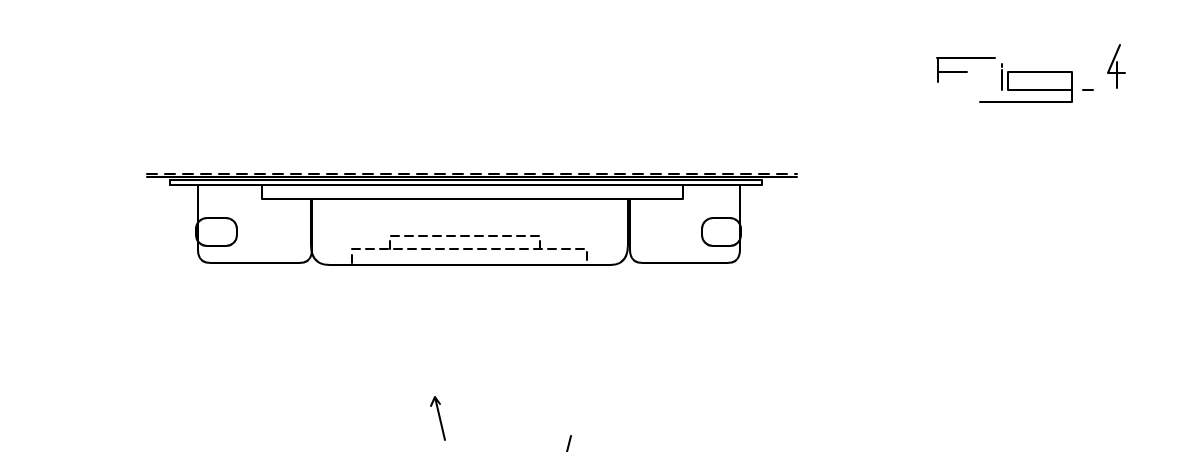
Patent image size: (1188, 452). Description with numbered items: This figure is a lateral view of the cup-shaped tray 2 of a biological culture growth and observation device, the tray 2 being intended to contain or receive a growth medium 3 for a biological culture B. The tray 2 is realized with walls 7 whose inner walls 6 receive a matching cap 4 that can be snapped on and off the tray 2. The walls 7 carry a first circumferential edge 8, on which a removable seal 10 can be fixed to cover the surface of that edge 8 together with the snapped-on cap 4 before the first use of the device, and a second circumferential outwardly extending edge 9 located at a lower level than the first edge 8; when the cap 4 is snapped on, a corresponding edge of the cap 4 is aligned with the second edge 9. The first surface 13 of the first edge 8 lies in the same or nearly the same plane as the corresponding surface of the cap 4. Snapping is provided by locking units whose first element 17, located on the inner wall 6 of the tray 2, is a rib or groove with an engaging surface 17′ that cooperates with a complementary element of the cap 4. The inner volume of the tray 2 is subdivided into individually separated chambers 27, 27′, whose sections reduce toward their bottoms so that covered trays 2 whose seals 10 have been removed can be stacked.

The cup-shaped tray 2 is at (441, 424).
The growth medium 3 is at (372, 270).
The cap 4 is at (571, 421).
The inner walls 6 is at (207, 223).
The walls 7 is at (277, 241).
The first circumferential edge 8 is at (152, 188).
The second circumferential outwardly extending edge 9 is at (178, 188).
The removable seal 10 is at (175, 178).
The first surface 13 is at (157, 166).
The first element 17 is at (201, 248).
The engaging surface 17′ is at (732, 263).
The chamber 27 is at (277, 230).
The chamber 27′ is at (688, 205).
The biological culture B is at (437, 243).